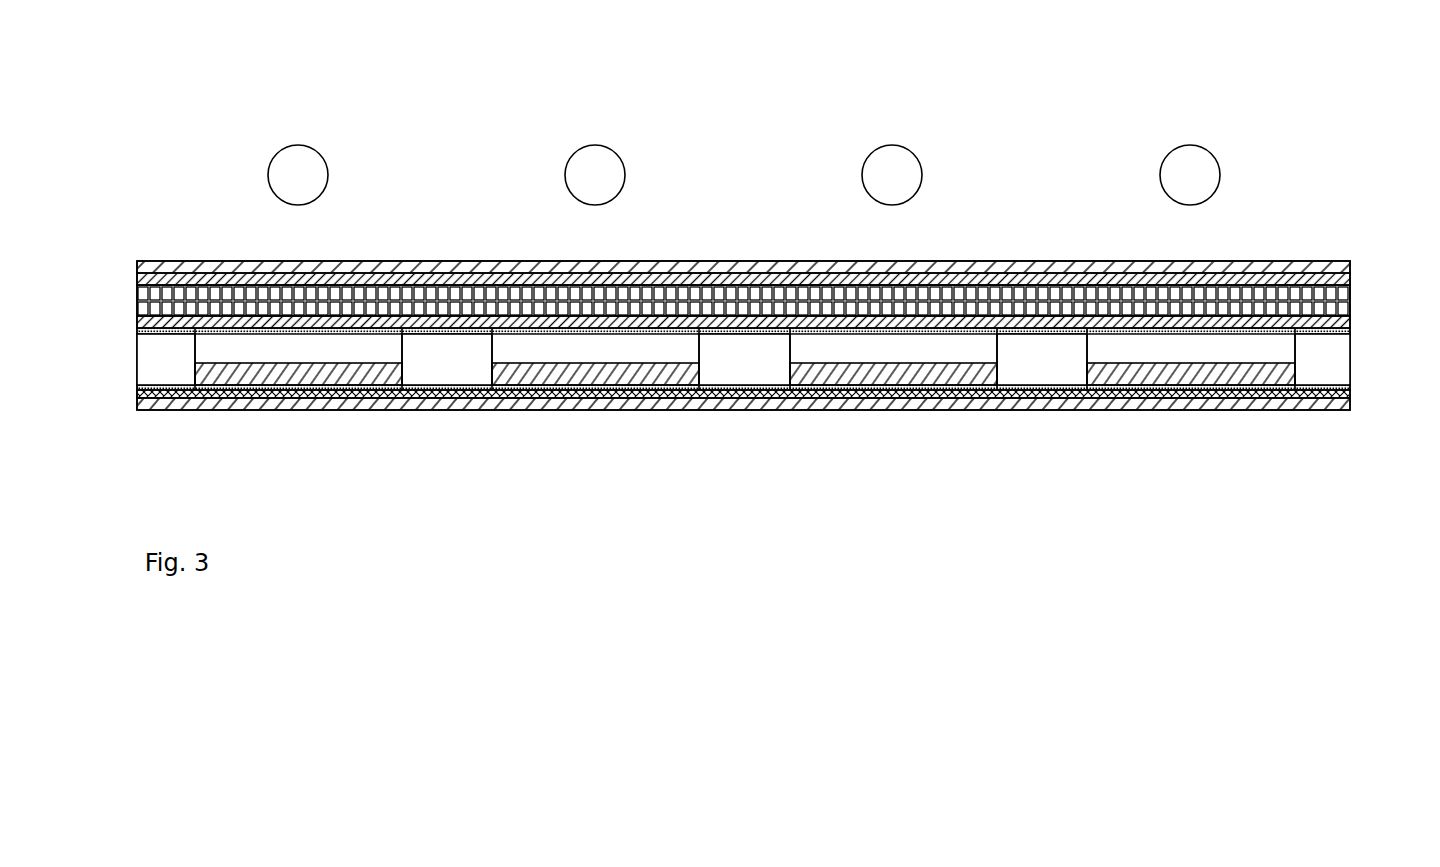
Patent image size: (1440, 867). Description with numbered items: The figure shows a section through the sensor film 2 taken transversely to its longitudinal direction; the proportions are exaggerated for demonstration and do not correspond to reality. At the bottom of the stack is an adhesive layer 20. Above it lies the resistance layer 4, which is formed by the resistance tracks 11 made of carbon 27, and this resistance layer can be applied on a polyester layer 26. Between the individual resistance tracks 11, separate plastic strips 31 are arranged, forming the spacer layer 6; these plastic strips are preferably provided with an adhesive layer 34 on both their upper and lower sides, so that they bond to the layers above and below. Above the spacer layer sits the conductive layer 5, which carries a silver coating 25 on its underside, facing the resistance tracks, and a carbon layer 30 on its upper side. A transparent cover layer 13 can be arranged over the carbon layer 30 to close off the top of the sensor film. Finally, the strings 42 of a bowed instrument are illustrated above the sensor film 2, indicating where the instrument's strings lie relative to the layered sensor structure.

The sensor film 2 is at (126, 232).
The transparent cover layer 13 is at (138, 267).
The carbon layer 30 is at (138, 280).
The conductive layer 5 is at (1354, 273).
The silver coating 25 is at (138, 322).
The adhesive layer 34 is at (149, 334).
The plastic strips 31 is at (185, 357).
The spacer layer 6 is at (1382, 328).
The resistance layer 4 is at (1354, 363).
The resistance tracks 11 is at (745, 449).
The carbon 27 is at (279, 375).
The polyester layer 26 is at (138, 390).
The adhesive layer 20 is at (138, 403).
The strings 42 is at (298, 145).